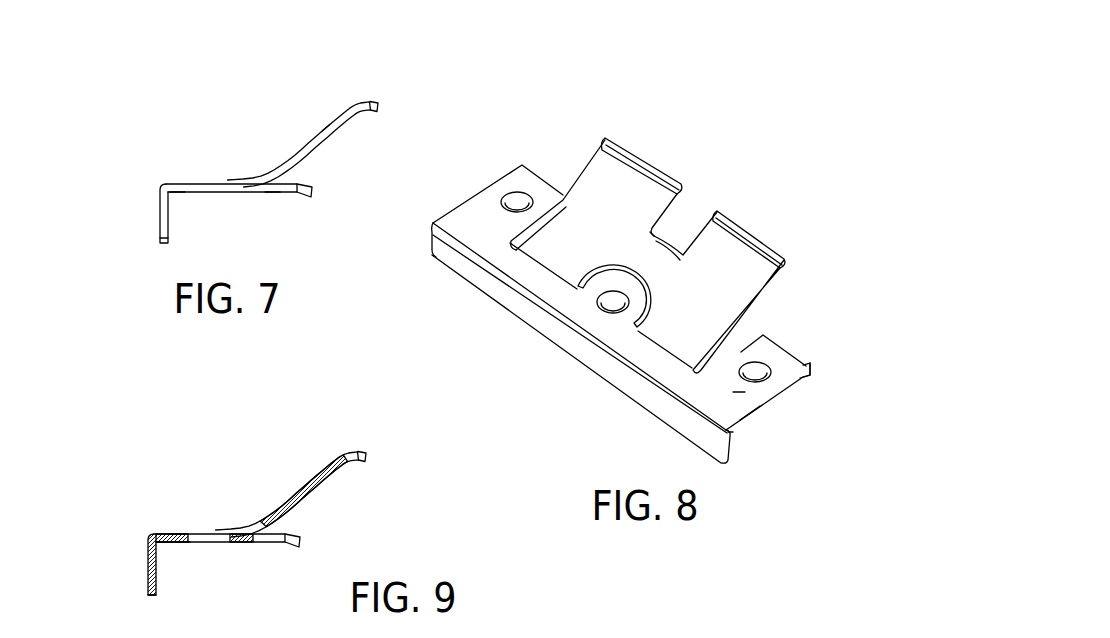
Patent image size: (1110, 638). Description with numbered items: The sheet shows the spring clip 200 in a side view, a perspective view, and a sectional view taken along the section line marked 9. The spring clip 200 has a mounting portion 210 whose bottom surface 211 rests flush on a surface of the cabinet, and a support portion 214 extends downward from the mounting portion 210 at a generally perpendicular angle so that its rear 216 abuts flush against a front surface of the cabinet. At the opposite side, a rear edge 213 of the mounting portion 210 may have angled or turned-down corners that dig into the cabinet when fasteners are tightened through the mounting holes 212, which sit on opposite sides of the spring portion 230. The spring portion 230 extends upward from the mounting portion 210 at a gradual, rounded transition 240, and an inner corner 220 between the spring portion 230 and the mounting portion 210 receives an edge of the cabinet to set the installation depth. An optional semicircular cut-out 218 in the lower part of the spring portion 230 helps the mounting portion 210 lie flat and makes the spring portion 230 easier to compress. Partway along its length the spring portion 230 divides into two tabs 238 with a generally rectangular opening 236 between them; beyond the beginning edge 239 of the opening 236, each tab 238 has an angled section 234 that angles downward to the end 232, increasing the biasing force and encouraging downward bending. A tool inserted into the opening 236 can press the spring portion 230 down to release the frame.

In FIG. 7, the spring clip 200 is at (304, 85).
In FIG. 9, the spring clip 200 is at (173, 430).
In FIG. 8, the spring clip 200 is at (781, 112).
In FIG. 9, the mounting portion 210 is at (177, 533).
In FIG. 8, the mounting portion 210 is at (737, 392).
In FIG. 7, the bottom surface 211 is at (272, 195).
In FIG. 9, the bottom surface 211 is at (182, 542).
In FIG. 8, the bottom surface 211 is at (757, 417).
In FIG. 8, the mounting holes 212 is at (518, 200).
In FIG. 7, the rear edge 213 is at (312, 187).
In FIG. 9, the rear edge 213 is at (303, 537).
In FIG. 8, the rear edge 213 is at (808, 367).
In FIG. 7, the support portion 214 is at (158, 220).
In FIG. 9, the support portion 214 is at (148, 577).
In FIG. 8, the support portion 214 is at (628, 378).
In FIG. 7, the rear of support portion 216 is at (167, 220).
In FIG. 9, the rear of support portion 216 is at (157, 583).
In FIG. 8, the cut-out 218 is at (636, 272).
In FIG. 7, the inner corner 220 is at (172, 193).
In FIG. 9, the inner corner 220 is at (160, 545).
In FIG. 8, the inner corner 220 is at (733, 432).
In FIG. 7, the spring portion 230 is at (305, 150).
In FIG. 9, the spring portion 230 is at (293, 505).
In FIG. 8, the spring portion 230 is at (602, 190).
In FIG. 7, the end 232 is at (377, 108).
In FIG. 9, the end 232 is at (367, 460).
In FIG. 8, the end 232 is at (632, 148).
In FIG. 7, the angled section 234 is at (335, 135).
In FIG. 9, the angled section 234 is at (330, 480).
In FIG. 8, the angled section 234 is at (786, 270).
In FIG. 8, the opening 236 is at (653, 233).
In FIG. 8, the tabs 238 is at (602, 163).
In FIG. 8, the beginning edge 239 is at (665, 233).
In FIG. 7, the transition 240 is at (216, 182).
In FIG. 9, the transition 240 is at (212, 534).
In FIG. 8, the transition 240 is at (552, 262).
In FIG. 8, the section line 9 is at (808, 192).